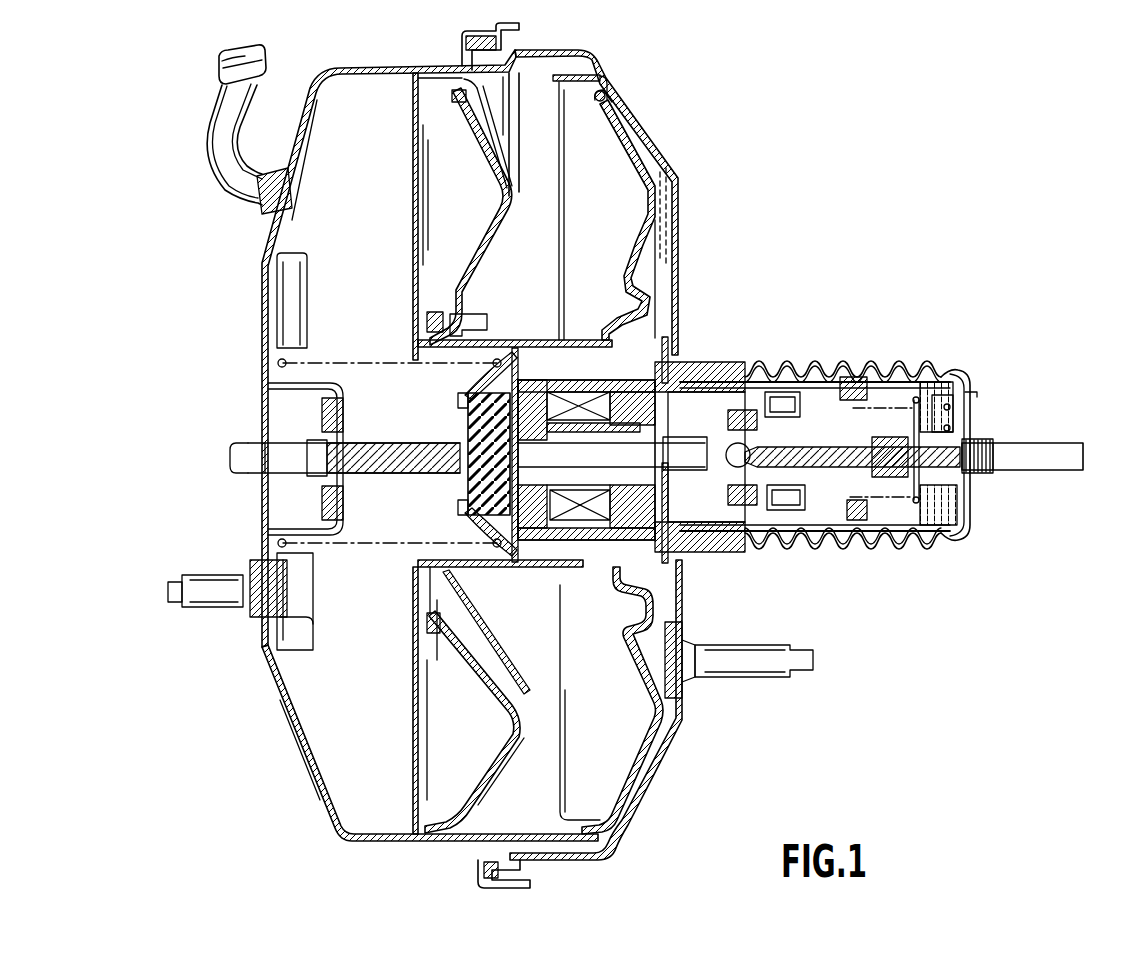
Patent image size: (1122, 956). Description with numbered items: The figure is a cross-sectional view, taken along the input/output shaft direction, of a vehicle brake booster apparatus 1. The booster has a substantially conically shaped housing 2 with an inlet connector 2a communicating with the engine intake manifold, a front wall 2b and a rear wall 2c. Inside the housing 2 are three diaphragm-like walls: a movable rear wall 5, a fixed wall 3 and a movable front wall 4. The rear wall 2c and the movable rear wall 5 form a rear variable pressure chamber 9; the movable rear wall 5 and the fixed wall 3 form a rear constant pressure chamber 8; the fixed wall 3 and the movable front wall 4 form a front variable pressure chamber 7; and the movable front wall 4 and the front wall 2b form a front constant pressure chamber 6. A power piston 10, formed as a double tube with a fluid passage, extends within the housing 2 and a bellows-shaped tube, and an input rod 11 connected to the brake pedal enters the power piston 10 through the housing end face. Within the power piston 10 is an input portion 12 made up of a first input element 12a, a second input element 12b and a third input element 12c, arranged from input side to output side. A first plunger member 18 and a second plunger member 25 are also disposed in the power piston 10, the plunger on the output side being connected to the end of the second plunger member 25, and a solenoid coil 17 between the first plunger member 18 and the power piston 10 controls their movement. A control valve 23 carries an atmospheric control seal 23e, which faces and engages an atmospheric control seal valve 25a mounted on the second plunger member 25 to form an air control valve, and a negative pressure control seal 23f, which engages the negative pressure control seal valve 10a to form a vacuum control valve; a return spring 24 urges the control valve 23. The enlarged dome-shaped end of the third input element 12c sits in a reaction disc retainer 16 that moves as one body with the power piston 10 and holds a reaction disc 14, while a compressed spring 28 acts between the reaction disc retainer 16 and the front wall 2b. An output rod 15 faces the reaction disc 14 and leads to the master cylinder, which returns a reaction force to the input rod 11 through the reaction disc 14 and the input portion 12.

The brake booster apparatus 1 is at (756, 198).
The housing 2 is at (630, 98).
The inlet connector 2a is at (212, 116).
The front wall of the housing 2b is at (290, 745).
The rear wall of the housing 2c is at (663, 758).
The fixed wall 3 is at (513, 115).
The movable front wall 4 is at (500, 190).
The movable rear wall 5 is at (647, 192).
The front constant pressure chamber 6 is at (334, 220).
The front variable pressure chamber 7 is at (516, 189).
The rear constant pressure chamber 8 is at (579, 255).
The rear variable pressure chamber 9 is at (645, 150).
The power piston 10 is at (877, 365).
The negative pressure control seal valve 10a is at (773, 380).
The input rod 11 is at (1058, 441).
The input portion 12 is at (677, 513).
The first input element 12a is at (688, 423).
The second input element 12b is at (563, 455).
The third input element 12c is at (520, 470).
The reaction disc 14 is at (480, 477).
The output rod 15 is at (398, 442).
The reaction disc retainer 16 is at (527, 405).
The solenoid coil 17 is at (578, 396).
The first plunger member 18 is at (583, 478).
The control valve 23 is at (823, 516).
The atmospheric control seal 23e is at (800, 505).
The negative pressure control seal 23f is at (767, 397).
The return spring 24 is at (898, 505).
The second plunger member 25 is at (723, 407).
The atmospheric control seal valve 25a is at (798, 483).
The spring 28 is at (377, 545).